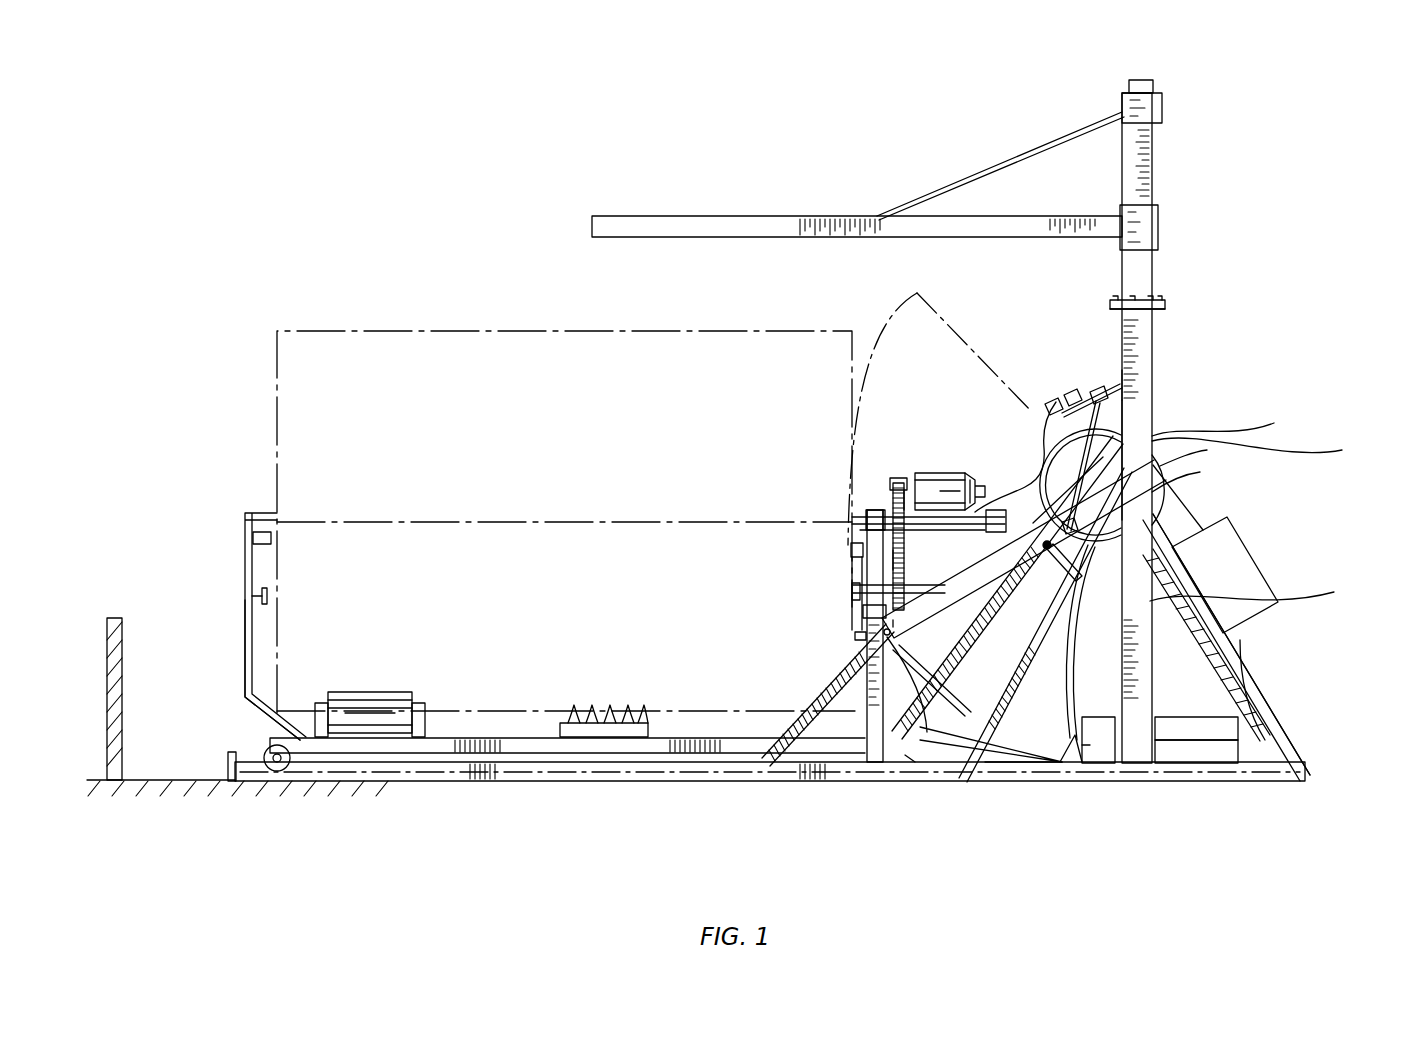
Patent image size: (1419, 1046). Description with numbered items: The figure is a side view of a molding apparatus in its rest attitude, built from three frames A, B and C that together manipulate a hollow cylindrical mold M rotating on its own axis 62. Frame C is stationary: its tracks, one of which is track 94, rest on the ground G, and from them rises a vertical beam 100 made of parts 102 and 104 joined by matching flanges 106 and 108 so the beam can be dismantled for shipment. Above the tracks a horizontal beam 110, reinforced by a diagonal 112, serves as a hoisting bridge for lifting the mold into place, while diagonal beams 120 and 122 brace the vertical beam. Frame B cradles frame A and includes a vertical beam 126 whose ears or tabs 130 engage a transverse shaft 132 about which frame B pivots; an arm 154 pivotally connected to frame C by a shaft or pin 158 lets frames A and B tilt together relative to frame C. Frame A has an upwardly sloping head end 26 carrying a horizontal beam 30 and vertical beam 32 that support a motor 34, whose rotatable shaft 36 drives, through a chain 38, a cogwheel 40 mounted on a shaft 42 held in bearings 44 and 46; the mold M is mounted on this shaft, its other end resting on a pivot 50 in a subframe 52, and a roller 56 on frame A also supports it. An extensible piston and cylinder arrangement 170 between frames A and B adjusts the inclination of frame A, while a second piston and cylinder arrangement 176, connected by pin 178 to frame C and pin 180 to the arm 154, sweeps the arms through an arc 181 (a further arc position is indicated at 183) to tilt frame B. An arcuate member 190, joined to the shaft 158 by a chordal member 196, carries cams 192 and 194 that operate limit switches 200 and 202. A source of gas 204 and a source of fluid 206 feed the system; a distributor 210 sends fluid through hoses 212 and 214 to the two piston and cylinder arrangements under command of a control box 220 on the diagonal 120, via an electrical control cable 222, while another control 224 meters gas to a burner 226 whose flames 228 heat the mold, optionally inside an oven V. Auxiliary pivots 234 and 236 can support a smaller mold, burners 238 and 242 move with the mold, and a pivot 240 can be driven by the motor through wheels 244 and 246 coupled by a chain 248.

The head end of frame A 26 is at (1052, 613).
The horizontal beam 30 is at (1043, 472).
The vertical beam 32 is at (851, 547).
The motor 34 is at (950, 473).
The rotatable shaft 36 is at (893, 478).
The chain 38 is at (906, 490).
The cogwheel 40 is at (924, 528).
The shaft 42 is at (886, 510).
The bearing 44 is at (870, 510).
The bearing 46 is at (1000, 514).
The pivot 50 is at (266, 513).
The subframe 52 is at (245, 565).
The roller 56 is at (376, 690).
The axis of mold 62 is at (531, 521).
The track 94 is at (418, 768).
The vertical beam 100 is at (1163, 413).
The part of vertical beam 102 is at (1150, 598).
The part of vertical beam 104 is at (1153, 148).
The flange 106 is at (1154, 297).
The flange 108 is at (1154, 312).
The horizontal beam 110 is at (757, 216).
The diagonal 112 is at (1018, 161).
The diagonal beam 120 is at (1272, 713).
The diagonal beam 122 is at (1047, 680).
The vertical beam 126 is at (868, 752).
The ears or tabs 130 is at (905, 763).
The transverse shaft 132 is at (916, 763).
The arm 154 is at (900, 667).
The shaft or pin 158 is at (1207, 450).
The piston and cylinder arrangement 170 is at (1015, 764).
The piston and cylinder arrangement 176 is at (1334, 592).
The pin 178 is at (1080, 620).
The pin 180 is at (1047, 549).
The arc 181 is at (884, 359).
The path line 183 is at (975, 373).
The arcuate member 190 is at (1050, 404).
The cam 192 is at (1274, 423).
The cam 194 is at (1200, 472).
The chordal member 196 is at (1342, 450).
The limit switch 200 is at (1066, 395).
The limit switch 202 is at (1074, 397).
The source of gas 204 is at (1174, 745).
The source of fluid 206 is at (1214, 755).
The distributor 210 is at (1099, 760).
The hose 212 is at (1087, 768).
The hose 214 is at (1076, 768).
The control box 220 is at (1233, 522).
The electrical control cable 222 is at (1270, 635).
The control 224 is at (1268, 700).
The burner 226 is at (612, 745).
The flames 228 is at (630, 706).
The auxiliary pivot 234 is at (268, 596).
The auxiliary pivot 236 is at (851, 592).
The burner 238 is at (272, 540).
The pivot 240 is at (865, 519).
The burner 242 is at (855, 639).
The wheel 244 is at (900, 479).
The wheel 246 is at (852, 594).
The chain 248 is at (893, 560).
The frame A is at (708, 727).
The frame B is at (956, 718).
The frame C is at (1166, 386).
The ground G is at (171, 778).
The mold M is at (369, 352).
The oven V is at (123, 668).